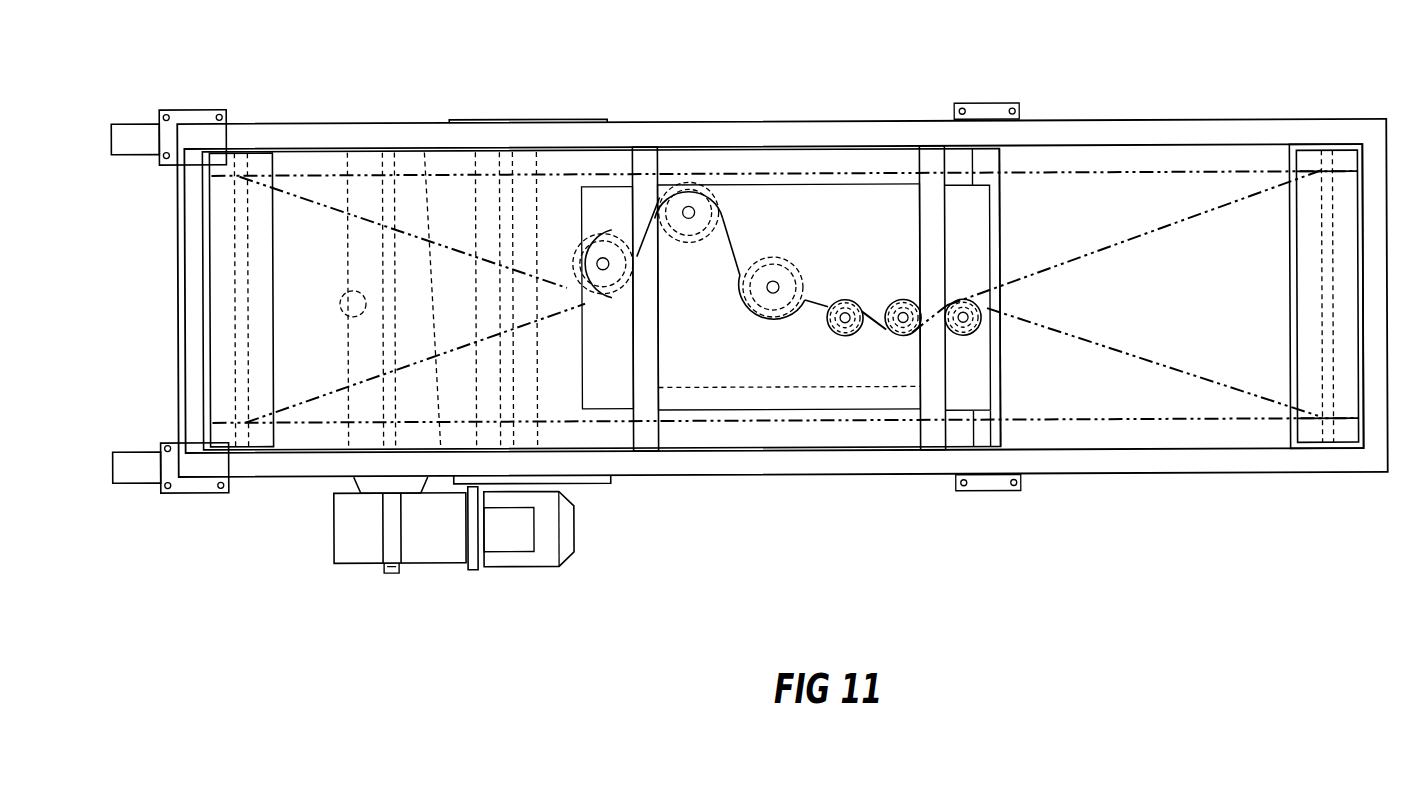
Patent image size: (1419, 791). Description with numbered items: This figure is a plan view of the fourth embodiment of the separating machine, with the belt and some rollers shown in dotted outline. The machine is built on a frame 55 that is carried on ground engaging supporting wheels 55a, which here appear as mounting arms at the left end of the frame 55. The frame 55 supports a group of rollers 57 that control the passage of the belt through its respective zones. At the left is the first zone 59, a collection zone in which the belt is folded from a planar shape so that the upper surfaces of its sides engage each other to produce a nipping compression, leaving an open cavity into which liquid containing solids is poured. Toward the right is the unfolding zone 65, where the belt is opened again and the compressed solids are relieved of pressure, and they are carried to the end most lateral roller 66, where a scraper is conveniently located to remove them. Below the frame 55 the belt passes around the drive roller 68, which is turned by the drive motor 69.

The frame 55 is at (1219, 130).
The ground engaging supporting wheels 55a is at (147, 140).
The rollers 57 is at (772, 278).
The first zone 59 is at (429, 313).
The unfolding zone 65 is at (1232, 313).
The end most lateral roller 66 is at (1308, 427).
The drive roller 68 is at (353, 406).
The drive motor 69 is at (353, 537).